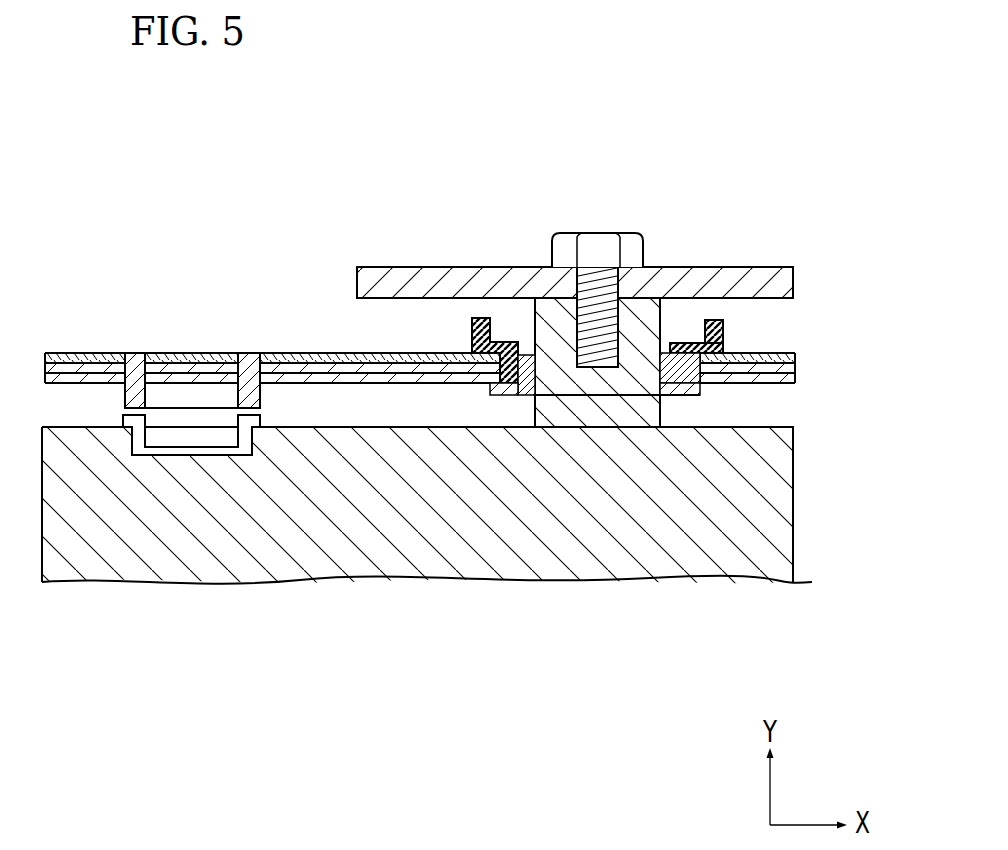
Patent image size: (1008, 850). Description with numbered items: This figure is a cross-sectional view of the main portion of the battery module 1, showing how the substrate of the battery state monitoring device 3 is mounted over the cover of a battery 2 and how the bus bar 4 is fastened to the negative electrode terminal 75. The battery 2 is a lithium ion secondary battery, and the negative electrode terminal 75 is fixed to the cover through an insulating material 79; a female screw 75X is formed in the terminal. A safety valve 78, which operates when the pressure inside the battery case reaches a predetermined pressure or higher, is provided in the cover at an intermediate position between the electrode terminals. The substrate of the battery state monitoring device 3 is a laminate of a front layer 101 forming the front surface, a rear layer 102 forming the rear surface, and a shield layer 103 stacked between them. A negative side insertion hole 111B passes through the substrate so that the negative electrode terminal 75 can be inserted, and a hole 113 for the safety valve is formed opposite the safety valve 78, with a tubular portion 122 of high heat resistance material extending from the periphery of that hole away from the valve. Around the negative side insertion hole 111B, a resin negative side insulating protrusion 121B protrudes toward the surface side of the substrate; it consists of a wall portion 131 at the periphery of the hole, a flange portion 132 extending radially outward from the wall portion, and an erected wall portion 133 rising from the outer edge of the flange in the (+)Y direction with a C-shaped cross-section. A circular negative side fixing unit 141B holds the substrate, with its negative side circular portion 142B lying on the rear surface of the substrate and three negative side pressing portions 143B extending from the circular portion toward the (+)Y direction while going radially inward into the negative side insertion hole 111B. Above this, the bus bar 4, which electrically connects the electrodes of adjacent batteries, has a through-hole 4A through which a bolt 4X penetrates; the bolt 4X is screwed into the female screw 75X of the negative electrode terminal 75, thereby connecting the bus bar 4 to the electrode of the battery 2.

The battery module 1 is at (595, 377).
The battery 2 is at (765, 630).
The battery state monitoring device 3 is at (449, 413).
The bus bar 4 is at (712, 250).
The bolt 4X is at (565, 230).
The through-hole 4A is at (612, 280).
The negative electrode terminal 75 is at (525, 352).
The female screw 75X is at (605, 353).
The safety valve 78 is at (262, 352).
The insulating material 79 is at (695, 398).
The front layer 101 is at (428, 353).
The rear layer 102 is at (427, 385).
The shield layer 103 is at (458, 367).
The negative side insertion hole 111B is at (510, 397).
The hole for safety valve 113 is at (143, 387).
The negative side insulating protrusion 121B is at (485, 312).
The tubular portion 122 is at (244, 352).
The wall portion 131 is at (661, 322).
The flange portion 132 is at (698, 343).
The erected wall portion 133 is at (720, 322).
The negative side fixing unit 141B is at (540, 407).
The negative side circular portion 142B is at (675, 398).
The negative side pressing portion 143B is at (665, 363).